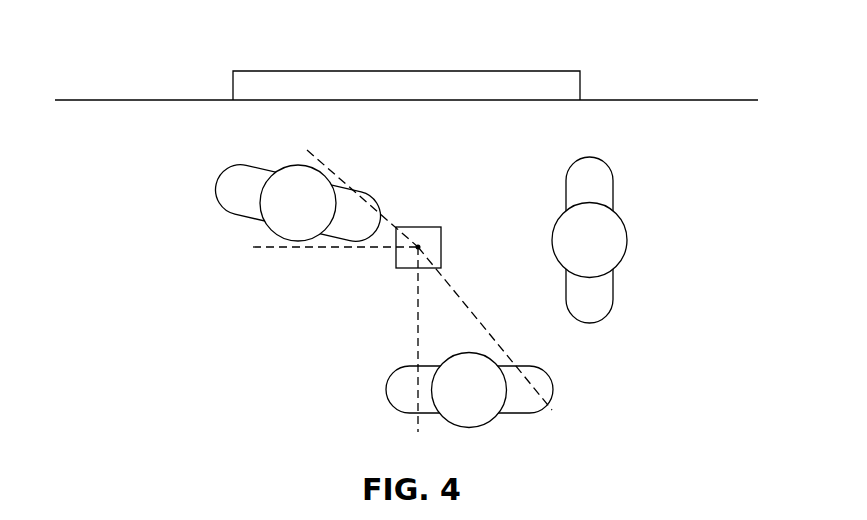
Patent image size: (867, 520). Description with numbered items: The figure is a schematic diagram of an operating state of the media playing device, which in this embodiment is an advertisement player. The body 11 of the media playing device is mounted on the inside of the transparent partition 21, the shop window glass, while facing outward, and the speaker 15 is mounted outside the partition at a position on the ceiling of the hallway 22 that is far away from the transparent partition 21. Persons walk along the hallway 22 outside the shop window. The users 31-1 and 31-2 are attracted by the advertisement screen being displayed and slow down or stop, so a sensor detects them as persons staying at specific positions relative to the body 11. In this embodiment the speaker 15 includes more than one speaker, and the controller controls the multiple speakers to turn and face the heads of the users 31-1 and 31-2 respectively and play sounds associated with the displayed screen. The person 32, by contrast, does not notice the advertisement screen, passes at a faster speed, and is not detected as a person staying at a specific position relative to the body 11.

The body 11 is at (300, 71).
The speaker 15 is at (429, 227).
The transparent partition 21 is at (168, 100).
The hallway 22 is at (115, 347).
The user 31-1 is at (216, 187).
The user 31-2 is at (387, 391).
The person 32 is at (612, 173).